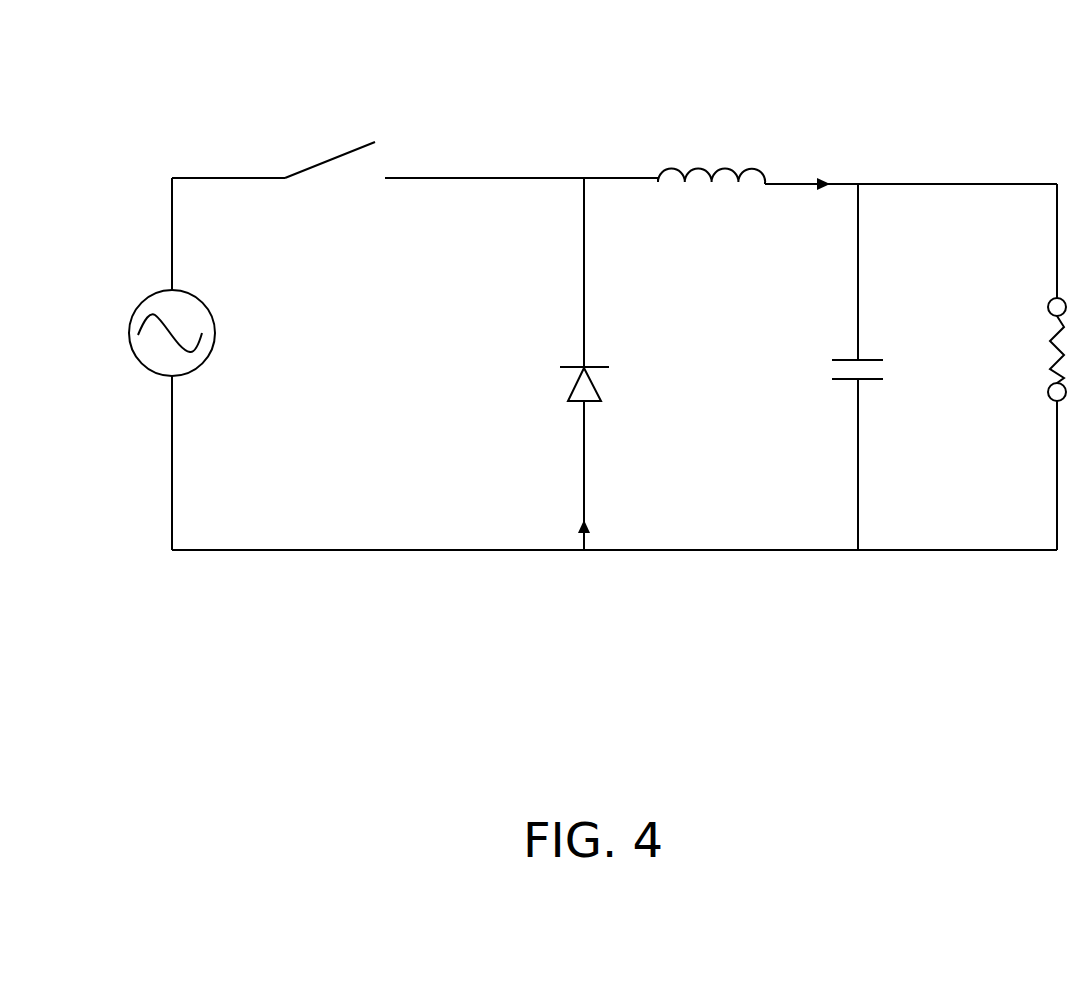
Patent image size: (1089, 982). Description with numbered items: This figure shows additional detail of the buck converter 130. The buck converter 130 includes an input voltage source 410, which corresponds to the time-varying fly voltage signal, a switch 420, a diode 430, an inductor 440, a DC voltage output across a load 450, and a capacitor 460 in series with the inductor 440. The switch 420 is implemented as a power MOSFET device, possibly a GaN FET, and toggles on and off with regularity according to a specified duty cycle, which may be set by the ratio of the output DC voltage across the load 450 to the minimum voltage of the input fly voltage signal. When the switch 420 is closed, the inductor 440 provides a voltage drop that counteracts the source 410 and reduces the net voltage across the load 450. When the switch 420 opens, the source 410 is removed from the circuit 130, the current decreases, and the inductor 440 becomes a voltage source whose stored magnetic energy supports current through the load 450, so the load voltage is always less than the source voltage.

The buck converter 130 is at (222, 125).
The input voltage source 410 is at (200, 365).
The switch 420 is at (389, 152).
The diode 430 is at (601, 401).
The inductor 440 is at (730, 170).
The load 450 is at (1050, 341).
The capacitor 460 is at (873, 380).